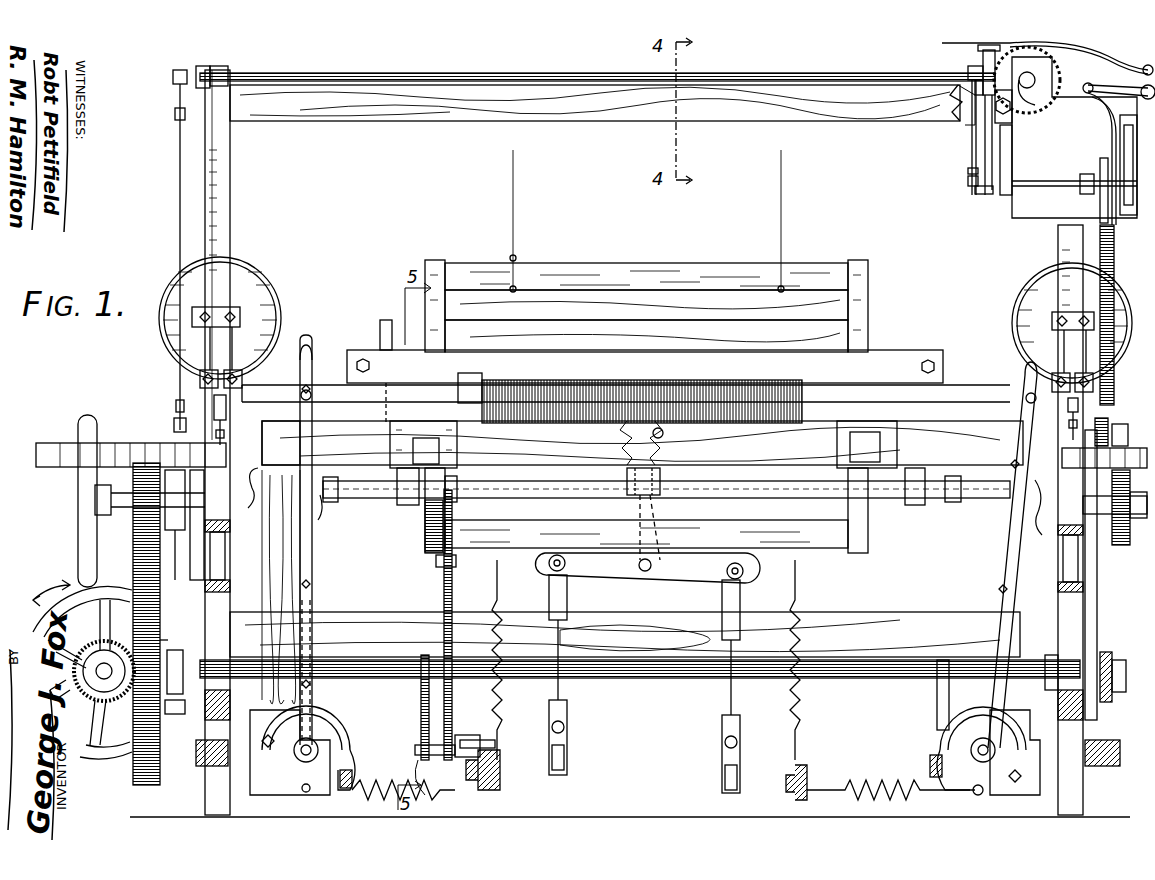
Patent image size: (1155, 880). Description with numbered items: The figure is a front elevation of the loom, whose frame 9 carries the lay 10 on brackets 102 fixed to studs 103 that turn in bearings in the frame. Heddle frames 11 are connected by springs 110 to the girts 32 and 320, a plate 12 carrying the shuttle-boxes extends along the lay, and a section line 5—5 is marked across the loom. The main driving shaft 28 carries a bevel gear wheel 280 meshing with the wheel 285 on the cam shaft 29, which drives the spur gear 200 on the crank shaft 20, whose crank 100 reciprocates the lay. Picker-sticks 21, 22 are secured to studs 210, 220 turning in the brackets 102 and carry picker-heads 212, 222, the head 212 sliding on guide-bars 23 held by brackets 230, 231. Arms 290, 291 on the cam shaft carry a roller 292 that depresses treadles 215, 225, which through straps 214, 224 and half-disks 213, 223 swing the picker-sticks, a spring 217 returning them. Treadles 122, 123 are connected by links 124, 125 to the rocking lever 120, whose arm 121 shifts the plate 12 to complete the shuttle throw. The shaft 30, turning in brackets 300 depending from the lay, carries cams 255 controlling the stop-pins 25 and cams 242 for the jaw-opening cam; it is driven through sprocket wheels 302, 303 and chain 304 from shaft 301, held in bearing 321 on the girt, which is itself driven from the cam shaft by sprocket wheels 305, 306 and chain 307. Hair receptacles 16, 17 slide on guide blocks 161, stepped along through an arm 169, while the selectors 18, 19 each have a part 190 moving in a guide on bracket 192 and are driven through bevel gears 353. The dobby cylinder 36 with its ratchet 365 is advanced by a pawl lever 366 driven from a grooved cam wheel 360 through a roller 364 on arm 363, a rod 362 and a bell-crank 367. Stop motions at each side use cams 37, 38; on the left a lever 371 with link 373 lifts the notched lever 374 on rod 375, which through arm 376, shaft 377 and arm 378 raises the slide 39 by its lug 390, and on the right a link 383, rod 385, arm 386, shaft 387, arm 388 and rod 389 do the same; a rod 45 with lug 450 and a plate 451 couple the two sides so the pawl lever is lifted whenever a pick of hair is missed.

The warp beam section 5 is at (646, 306).
The frame 9 is at (232, 222).
The lay 10 is at (955, 435).
The heddle frames 11 is at (838, 278).
The plate 12 is at (668, 425).
The receptacle 16 is at (56, 462).
The receptacle 17 is at (1135, 450).
The selector 18 is at (223, 445).
The selector 19 is at (1068, 428).
The crank shaft 20 is at (322, 515).
The picker-stick 21 is at (316, 572).
The picker-stick 22 is at (1010, 530).
The guide-bars 23 is at (388, 395).
The stop-pins 25 is at (350, 362).
The main driving shaft 28 is at (100, 665).
The cam shaft 29 is at (668, 680).
The shaft 30 is at (535, 492).
The girt 32 is at (495, 798).
The dobby cylinder 36 is at (1036, 100).
The cam 37 is at (180, 655).
The cam 38 is at (1110, 652).
The slide 39 is at (983, 60).
The rod 45 is at (972, 138).
The crank 100 is at (258, 480).
The brackets 102 is at (262, 780).
The studs 103 is at (204, 756).
The springs 110 is at (500, 700).
The rocking lever 120 is at (700, 565).
The arm 121 is at (640, 506).
The treadle 122 is at (562, 780).
The treadle 123 is at (728, 795).
The link 124 is at (564, 695).
The link 125 is at (735, 698).
The guide block 161 is at (152, 520).
The arm 169 is at (200, 572).
The part of selector 190 is at (1070, 350).
The bracket 192 is at (1055, 318).
The spur gear 200 is at (130, 524).
The stud 210 is at (306, 790).
The picker-head 212 is at (312, 392).
The half-disk 213 is at (330, 718).
The strap 214 is at (348, 745).
The treadle 215 is at (350, 795).
The spring 217 is at (398, 800).
The stud 220 is at (980, 755).
The picker-head 222 is at (1022, 390).
The half disk 223 is at (940, 735).
The strap 224 is at (945, 722).
The treadle 225 is at (930, 762).
The bracket 230 is at (244, 375).
The bracket 231 is at (470, 385).
The cams 242 is at (420, 508).
The cams 255 is at (332, 492).
The bevel gear wheel 280 is at (98, 752).
The wheel 285 is at (134, 778).
The arm 290 is at (436, 560).
The arm 291 is at (937, 700).
The roller 292 is at (440, 580).
The brackets 300 is at (400, 494).
The shaft 301 is at (440, 762).
The sprocket wheel 302 is at (460, 735).
The sprocket wheel 303 is at (455, 492).
The sprocket chain 304 is at (442, 597).
The sprocket wheel 305 is at (425, 680).
The sprocket wheel 306 is at (424, 798).
The sprocket chain 307 is at (425, 728).
The girt 320 is at (795, 800).
The bearing 321 is at (480, 746).
The bevel gear 353 is at (168, 340).
The grooved cam wheel 360 is at (1120, 532).
The rod 362 is at (1110, 145).
The arm 363 is at (1108, 416).
The roller 364 is at (1120, 428).
The ratchet 365 is at (1055, 100).
The pawl lever 366 is at (1105, 58).
The bell-crank 367 is at (1115, 85).
The lever 371 is at (176, 424).
The link 373 is at (172, 572).
The notched lever 374 is at (178, 405).
The rod 375 is at (180, 205).
The arm 376 is at (212, 70).
The shaft 377 is at (462, 74).
The arm 378 is at (970, 122).
The link 383 is at (1098, 602).
The rod 385 is at (1062, 254).
The arm 386 is at (1085, 195).
The shaft 387 is at (1025, 190).
The arm 388 is at (980, 195).
The rod 389 is at (983, 150).
The lug 390 is at (968, 72).
The lug 450 is at (970, 182).
The plate 451 is at (968, 170).